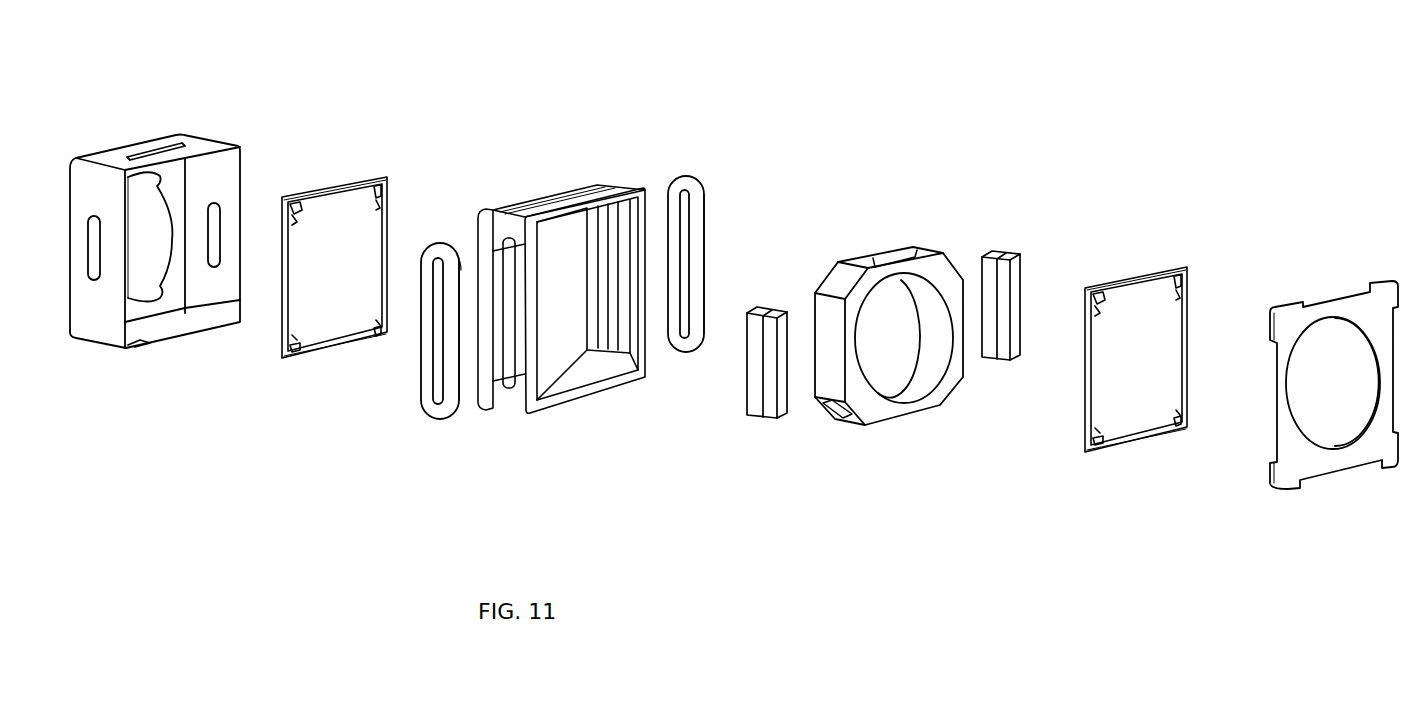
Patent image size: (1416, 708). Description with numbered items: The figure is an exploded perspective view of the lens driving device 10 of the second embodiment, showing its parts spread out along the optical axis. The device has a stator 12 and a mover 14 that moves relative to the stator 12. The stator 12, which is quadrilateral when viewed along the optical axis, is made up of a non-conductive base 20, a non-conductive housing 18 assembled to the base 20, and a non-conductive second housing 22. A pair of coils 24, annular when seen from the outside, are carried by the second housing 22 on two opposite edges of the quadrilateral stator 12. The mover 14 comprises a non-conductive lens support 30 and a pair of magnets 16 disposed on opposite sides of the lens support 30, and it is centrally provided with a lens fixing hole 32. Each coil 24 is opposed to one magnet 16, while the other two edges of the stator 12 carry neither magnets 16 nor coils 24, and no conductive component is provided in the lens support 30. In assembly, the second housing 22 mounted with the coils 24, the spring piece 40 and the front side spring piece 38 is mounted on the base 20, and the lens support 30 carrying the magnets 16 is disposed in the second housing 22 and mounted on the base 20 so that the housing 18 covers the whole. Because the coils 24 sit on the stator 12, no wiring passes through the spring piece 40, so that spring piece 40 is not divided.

The lens driving device 10 is at (1045, 174).
The stator 12 is at (255, 134).
The mover 14 is at (845, 184).
The magnet 16 is at (770, 421).
The housing 18 is at (105, 333).
The base 20 is at (1318, 468).
The second housing 22 is at (527, 197).
The coil 24 is at (424, 416).
The lens support 30 is at (906, 247).
The lens fixing hole 32 is at (935, 290).
The front side spring piece 38 is at (340, 178).
The spring piece 40 is at (1110, 278).